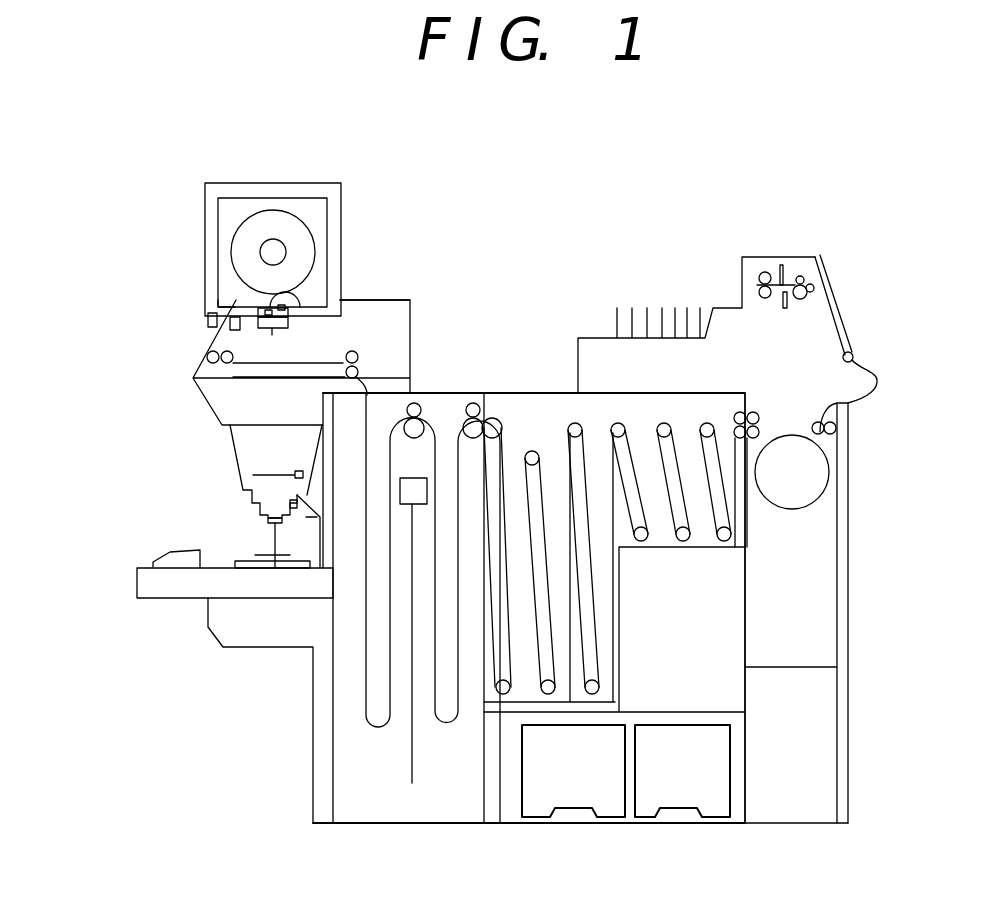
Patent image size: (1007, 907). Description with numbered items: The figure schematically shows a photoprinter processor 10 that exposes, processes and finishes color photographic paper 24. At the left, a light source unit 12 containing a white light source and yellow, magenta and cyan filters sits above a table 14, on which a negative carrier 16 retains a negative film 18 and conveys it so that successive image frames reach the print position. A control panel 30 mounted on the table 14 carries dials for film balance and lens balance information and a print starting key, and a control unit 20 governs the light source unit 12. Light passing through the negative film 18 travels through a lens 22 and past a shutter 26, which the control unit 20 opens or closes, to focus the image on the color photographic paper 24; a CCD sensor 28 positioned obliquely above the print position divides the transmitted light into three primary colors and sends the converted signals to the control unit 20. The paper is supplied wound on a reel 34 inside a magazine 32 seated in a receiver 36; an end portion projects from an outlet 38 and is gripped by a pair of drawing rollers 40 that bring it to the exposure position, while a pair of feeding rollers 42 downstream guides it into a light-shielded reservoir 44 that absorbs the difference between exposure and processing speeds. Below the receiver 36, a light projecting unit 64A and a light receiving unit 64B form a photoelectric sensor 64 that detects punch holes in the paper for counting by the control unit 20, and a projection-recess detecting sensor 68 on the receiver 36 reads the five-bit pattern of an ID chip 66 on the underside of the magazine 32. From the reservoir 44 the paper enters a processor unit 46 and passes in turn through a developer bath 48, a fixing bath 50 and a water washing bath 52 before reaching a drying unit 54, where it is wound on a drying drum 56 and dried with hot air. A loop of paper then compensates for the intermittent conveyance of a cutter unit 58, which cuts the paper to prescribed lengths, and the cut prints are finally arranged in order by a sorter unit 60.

The photoprinter processor 10 is at (555, 207).
The light source unit 12 is at (242, 630).
The table 14 is at (153, 583).
The negative carrier 16 is at (235, 560).
The negative film 18 is at (268, 552).
The control unit 20 is at (810, 788).
The lens 22 is at (278, 568).
The color photographic paper 24 is at (337, 363).
The shutter 26 is at (277, 470).
The CCD sensor 28 is at (291, 498).
The control panel 30 is at (155, 551).
The magazine 32 is at (307, 198).
The reel 34 is at (272, 240).
The receiver 36 is at (342, 312).
The outlet 38 is at (235, 298).
The drawing rollers 40 is at (207, 358).
The feeding rollers 42 is at (360, 356).
The reservoir 44 is at (381, 770).
The processor unit 46 is at (551, 426).
The developer bath 48 is at (568, 657).
The fixing bath 50 is at (612, 461).
The water washing bath 52 is at (747, 488).
The drying unit 54 is at (810, 533).
The drying drum 56 is at (802, 472).
The cutter unit 58 is at (802, 269).
The sorter unit 60 is at (657, 298).
The photoelectric sensor 64 is at (66, 270).
The light projecting unit 64A is at (206, 322).
The light receiving unit 64B is at (196, 340).
The ID chip 66 is at (297, 305).
The projection-recess detecting sensor 68 is at (272, 335).